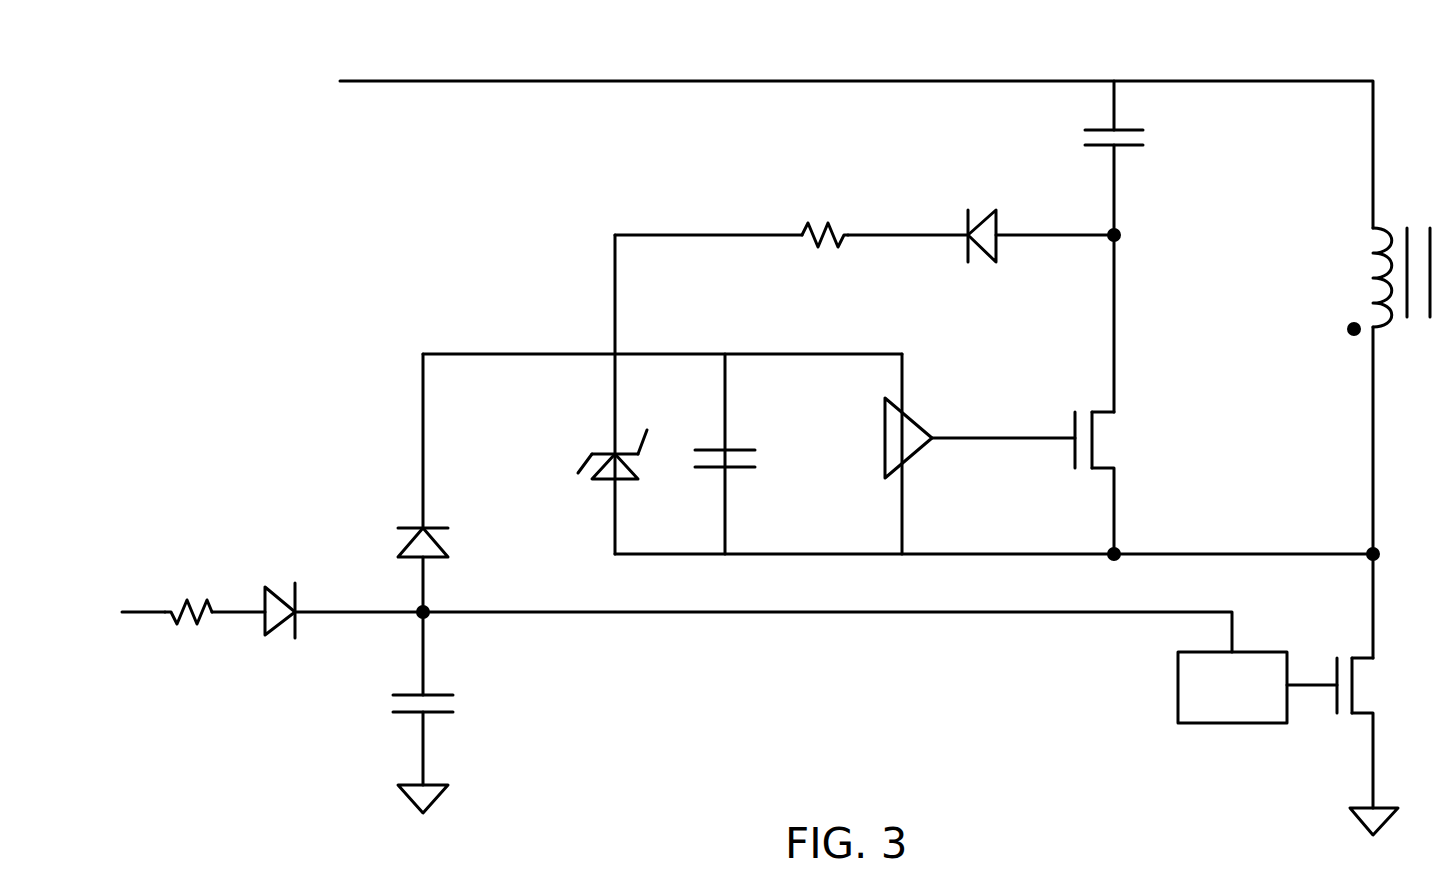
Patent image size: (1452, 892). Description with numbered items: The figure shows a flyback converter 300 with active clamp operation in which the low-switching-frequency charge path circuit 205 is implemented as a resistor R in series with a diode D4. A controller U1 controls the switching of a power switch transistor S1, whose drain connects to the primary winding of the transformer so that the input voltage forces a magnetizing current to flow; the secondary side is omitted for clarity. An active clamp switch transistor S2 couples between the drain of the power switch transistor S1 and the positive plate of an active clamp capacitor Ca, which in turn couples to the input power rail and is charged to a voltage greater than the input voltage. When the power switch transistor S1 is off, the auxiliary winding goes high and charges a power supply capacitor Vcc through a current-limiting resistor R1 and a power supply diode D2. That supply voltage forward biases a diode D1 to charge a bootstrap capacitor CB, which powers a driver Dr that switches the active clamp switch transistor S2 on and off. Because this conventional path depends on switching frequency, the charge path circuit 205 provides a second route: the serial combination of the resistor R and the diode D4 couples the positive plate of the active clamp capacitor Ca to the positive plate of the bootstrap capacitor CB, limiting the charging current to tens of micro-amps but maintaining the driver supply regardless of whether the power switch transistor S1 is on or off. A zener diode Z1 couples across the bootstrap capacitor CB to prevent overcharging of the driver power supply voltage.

The flyback converter 300 is at (1040, 40).
The charge path circuit 205 is at (790, 203).
The active clamp capacitor Ca is at (1140, 246).
The diode D4 is at (981, 217).
The zener diode Z1 is at (595, 455).
The bootstrap capacitor CB is at (732, 454).
The driver Dr is at (920, 454).
The active clamp switch transistor S2 is at (1039, 483).
The diode D1 is at (444, 483).
The power supply capacitor Vcc is at (440, 712).
The current-limiting resistor R1 is at (167, 633).
The power supply diode D2 is at (254, 589).
The controller U1 is at (1232, 687).
The power switch transistor S1 is at (1348, 746).